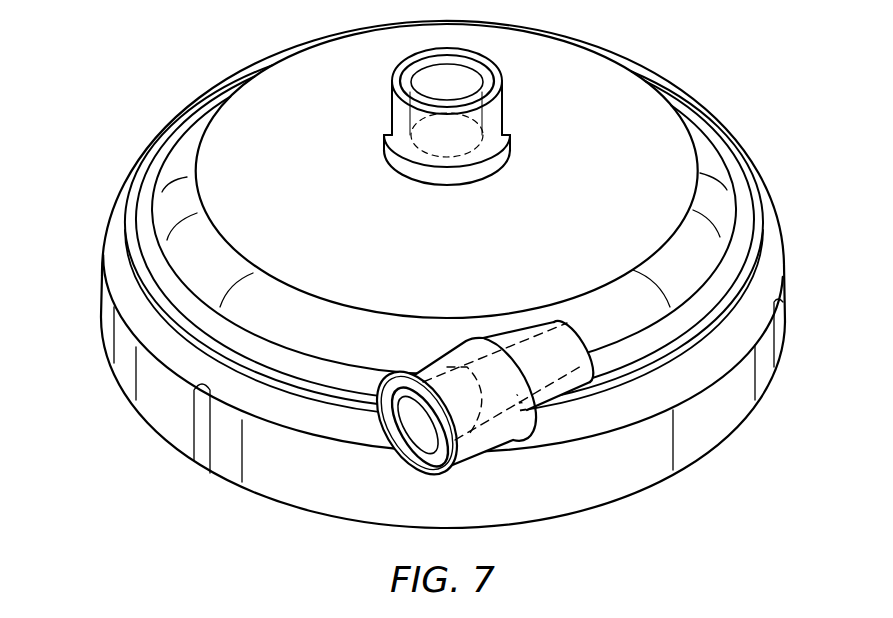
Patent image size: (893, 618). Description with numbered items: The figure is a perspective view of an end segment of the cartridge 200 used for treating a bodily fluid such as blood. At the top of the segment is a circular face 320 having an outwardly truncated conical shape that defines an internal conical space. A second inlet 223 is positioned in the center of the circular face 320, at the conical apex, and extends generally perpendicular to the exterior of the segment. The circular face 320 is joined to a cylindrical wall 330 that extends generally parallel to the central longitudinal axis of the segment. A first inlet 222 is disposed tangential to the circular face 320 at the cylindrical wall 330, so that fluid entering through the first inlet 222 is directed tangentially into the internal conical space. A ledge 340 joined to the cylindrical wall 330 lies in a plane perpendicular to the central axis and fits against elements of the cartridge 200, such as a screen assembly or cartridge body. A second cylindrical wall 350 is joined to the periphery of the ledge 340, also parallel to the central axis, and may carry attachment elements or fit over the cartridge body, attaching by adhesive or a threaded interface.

The cartridge 200 is at (447, 282).
The circular face 320 is at (560, 57).
The second inlet 223 is at (503, 100).
The cylindrical wall 330 is at (737, 218).
The ledge 340 is at (785, 250).
The second cylindrical wall 350 is at (728, 415).
The first inlet 222 is at (455, 450).